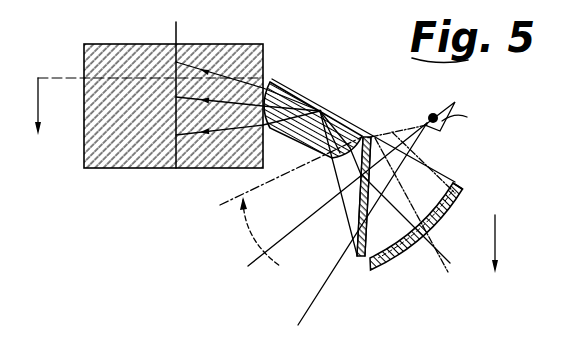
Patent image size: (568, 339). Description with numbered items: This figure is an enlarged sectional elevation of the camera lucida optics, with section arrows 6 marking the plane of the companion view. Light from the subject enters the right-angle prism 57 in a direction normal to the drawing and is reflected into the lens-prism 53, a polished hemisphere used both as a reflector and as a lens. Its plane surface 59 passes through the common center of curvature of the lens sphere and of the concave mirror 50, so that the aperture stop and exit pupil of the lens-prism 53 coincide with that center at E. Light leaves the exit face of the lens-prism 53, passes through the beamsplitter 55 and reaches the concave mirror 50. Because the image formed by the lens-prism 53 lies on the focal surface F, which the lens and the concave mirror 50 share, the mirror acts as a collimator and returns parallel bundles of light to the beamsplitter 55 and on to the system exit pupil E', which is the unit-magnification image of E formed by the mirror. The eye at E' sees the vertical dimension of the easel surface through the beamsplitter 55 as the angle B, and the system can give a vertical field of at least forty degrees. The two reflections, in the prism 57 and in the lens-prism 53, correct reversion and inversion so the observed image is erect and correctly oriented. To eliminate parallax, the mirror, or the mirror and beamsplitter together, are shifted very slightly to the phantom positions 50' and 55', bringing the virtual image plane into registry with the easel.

The right-angle prism 57 is at (164, 44).
The lens-prism 53 is at (305, 147).
The plane surface 59 is at (365, 136).
The beamsplitter 55 is at (380, 196).
The phantom position of beamsplitter 55' is at (338, 196).
The concave mirror 50 is at (416, 235).
The phantom position of concave mirror 50' is at (487, 191).
The exit pupil of the lens E is at (335, 118).
The exit pupil of the system E' is at (453, 116).
The focal surface F is at (333, 190).
The angle beta B is at (311, 291).
The section line 6- 6 is at (262, 187).